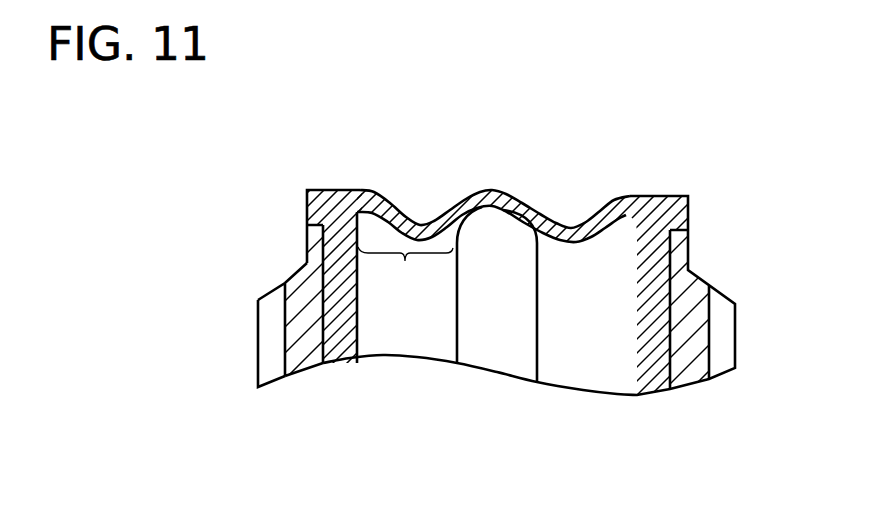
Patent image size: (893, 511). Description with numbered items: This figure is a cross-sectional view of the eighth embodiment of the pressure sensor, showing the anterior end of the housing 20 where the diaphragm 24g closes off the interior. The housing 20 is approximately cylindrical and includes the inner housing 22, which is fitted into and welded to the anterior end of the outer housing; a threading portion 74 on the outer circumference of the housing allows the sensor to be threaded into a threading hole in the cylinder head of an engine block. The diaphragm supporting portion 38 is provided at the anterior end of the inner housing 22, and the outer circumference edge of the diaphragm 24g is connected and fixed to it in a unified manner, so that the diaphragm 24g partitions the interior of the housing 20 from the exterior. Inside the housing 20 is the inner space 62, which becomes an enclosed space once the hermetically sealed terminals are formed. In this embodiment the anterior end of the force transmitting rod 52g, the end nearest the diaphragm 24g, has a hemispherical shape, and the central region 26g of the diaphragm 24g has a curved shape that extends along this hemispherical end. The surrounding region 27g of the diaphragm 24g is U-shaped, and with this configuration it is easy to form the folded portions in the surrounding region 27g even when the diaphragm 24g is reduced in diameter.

The housing 20 is at (268, 279).
The inner housing 22 is at (342, 353).
The diaphragm 24g is at (484, 170).
The central region 26g is at (517, 192).
The surrounding region 27g is at (405, 261).
The diaphragm supporting portion 38 is at (310, 213).
The force transmitting rod 52g is at (498, 352).
The inner space 62 is at (305, 360).
The threading portion 74 is at (268, 373).